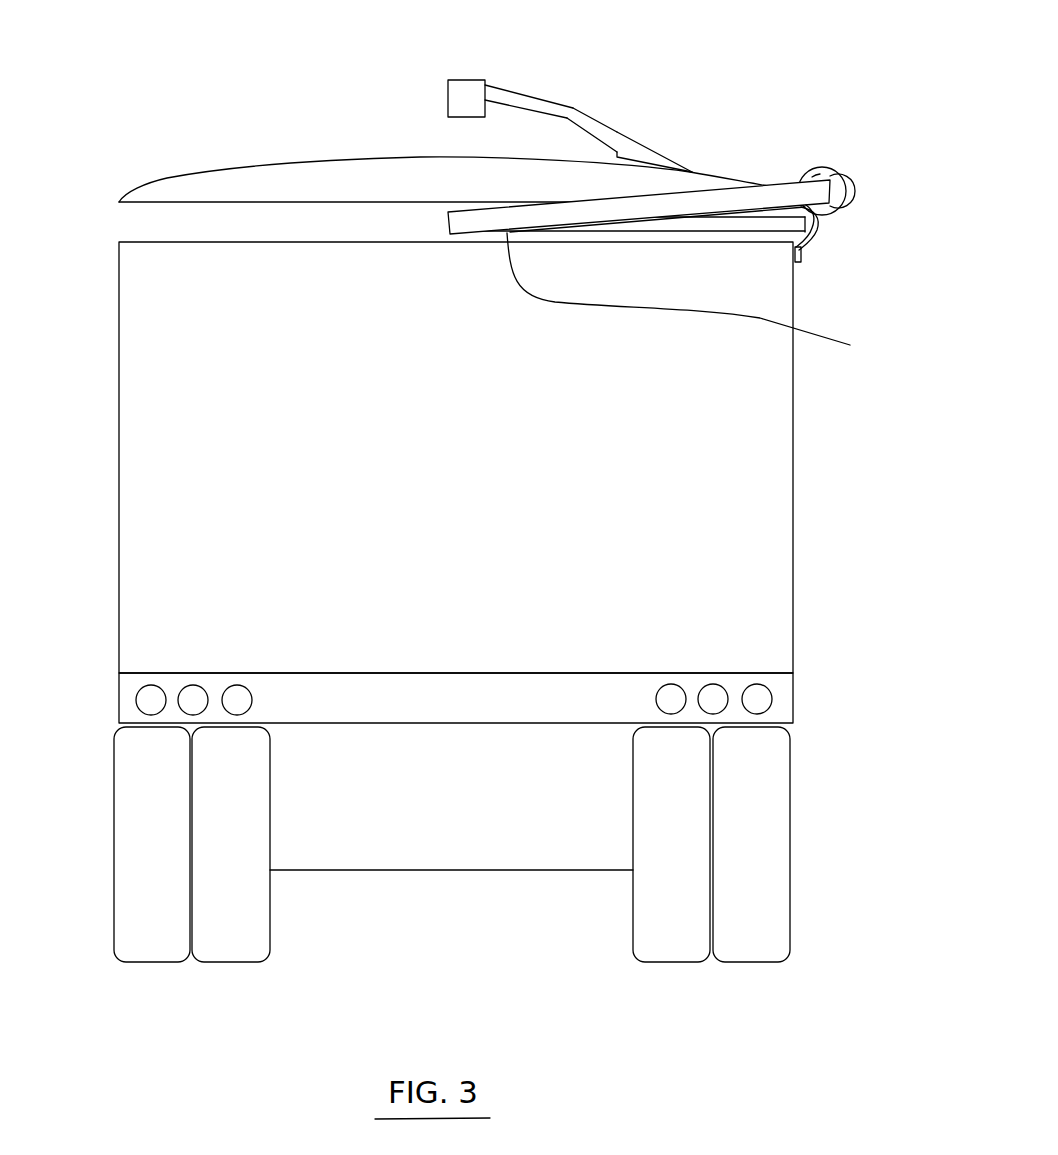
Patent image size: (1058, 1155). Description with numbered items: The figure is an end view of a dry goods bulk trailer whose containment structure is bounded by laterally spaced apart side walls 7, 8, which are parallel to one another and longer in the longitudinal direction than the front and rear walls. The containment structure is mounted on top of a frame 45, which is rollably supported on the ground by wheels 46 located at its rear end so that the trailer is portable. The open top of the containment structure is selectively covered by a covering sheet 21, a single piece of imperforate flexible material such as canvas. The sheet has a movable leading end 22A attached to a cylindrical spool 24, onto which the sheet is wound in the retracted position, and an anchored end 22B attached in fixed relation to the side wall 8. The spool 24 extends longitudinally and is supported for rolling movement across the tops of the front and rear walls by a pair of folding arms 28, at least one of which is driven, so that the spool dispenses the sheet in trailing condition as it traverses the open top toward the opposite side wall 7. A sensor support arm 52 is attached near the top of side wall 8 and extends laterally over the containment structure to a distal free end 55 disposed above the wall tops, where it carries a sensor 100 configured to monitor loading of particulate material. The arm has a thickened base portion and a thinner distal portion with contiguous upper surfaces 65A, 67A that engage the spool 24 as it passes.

The side wall 7 is at (458, 592).
The side wall 8 is at (797, 472).
The covering sheet 21 is at (849, 197).
The leading end of the covering sheet 22A is at (848, 180).
The anchored end of the covering sheet 22B is at (800, 262).
The spool 24 is at (879, 164).
The folding arm 28 is at (698, 298).
The frame 45 is at (793, 698).
The wheels 46 is at (748, 962).
The sensor support arm 52 is at (609, 93).
The distal free end of the arm 55 is at (488, 83).
The upper surface of the base portion 65A is at (663, 156).
The upper surface of the distal portion 67A is at (590, 114).
The sensor 100 is at (462, 80).